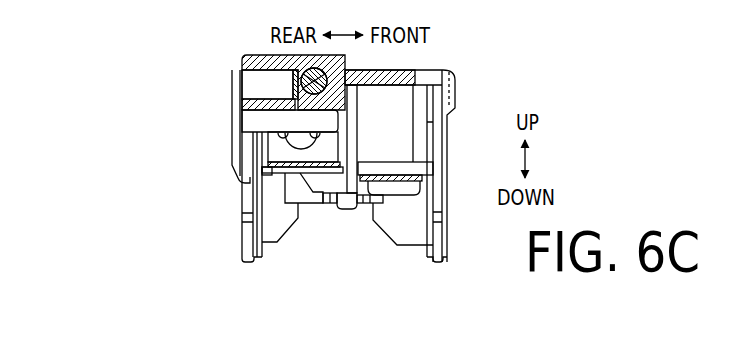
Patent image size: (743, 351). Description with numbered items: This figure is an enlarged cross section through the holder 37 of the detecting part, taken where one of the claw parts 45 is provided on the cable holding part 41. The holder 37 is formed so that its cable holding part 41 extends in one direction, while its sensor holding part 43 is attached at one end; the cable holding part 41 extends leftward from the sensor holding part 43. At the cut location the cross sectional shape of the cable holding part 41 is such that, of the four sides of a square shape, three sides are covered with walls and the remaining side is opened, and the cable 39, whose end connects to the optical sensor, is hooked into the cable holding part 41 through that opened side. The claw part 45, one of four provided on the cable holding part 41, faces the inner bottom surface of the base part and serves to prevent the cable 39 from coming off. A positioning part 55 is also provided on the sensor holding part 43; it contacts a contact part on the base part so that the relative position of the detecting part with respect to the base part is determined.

The holder 37 is at (431, 72).
The cable 39 is at (300, 77).
The cable holding part 41 is at (270, 56).
The sensor holding part 43 is at (447, 130).
The claw part 45 is at (290, 106).
The positioning part 55 is at (248, 237).